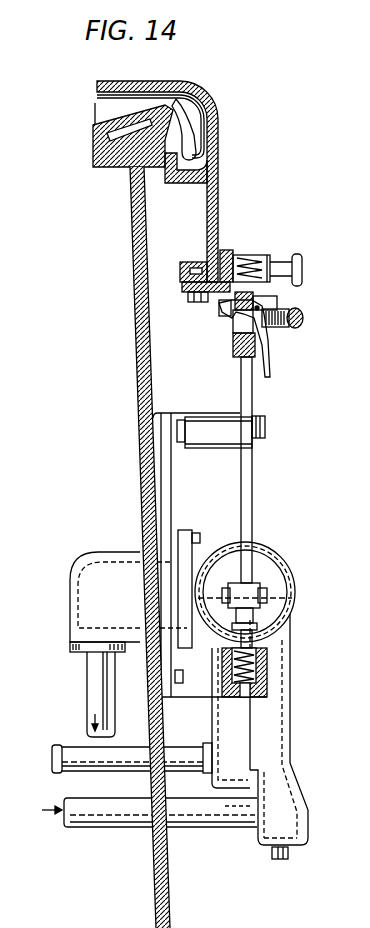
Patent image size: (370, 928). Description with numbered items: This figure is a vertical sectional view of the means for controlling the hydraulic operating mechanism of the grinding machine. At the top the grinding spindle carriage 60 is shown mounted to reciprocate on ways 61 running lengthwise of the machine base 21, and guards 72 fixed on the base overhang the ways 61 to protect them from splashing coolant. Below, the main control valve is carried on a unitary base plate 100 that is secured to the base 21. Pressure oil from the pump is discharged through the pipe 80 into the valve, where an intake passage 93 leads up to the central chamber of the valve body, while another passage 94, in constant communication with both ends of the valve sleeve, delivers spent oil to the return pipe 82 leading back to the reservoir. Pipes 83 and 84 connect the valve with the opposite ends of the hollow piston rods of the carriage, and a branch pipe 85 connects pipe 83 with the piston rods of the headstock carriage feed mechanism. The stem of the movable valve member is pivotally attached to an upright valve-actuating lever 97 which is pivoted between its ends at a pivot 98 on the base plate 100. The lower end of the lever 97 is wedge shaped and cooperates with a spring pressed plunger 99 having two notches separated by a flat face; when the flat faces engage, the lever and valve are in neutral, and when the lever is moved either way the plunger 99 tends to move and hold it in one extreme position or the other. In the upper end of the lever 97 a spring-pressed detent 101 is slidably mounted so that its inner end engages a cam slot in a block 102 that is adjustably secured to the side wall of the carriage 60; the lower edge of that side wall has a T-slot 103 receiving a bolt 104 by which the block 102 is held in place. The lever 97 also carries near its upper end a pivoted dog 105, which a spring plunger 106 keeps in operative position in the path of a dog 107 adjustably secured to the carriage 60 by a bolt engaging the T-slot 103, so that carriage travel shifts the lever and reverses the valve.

The base 21 is at (138, 358).
The grinding spindle carriage 60 is at (219, 174).
The ways 61 is at (123, 170).
The guards 72 is at (186, 140).
The pipe 80 is at (108, 819).
The pipe 82 is at (97, 692).
The pipe 83 is at (55, 762).
The pipe 84 is at (87, 763).
The branch pipe 85 is at (270, 563).
The intake passage 93 is at (287, 703).
The passage 94 is at (118, 566).
The valve-actuating lever 97 is at (253, 488).
The pivot 98 is at (265, 432).
The spring pressed plunger 99 is at (262, 660).
The unitary base plate 100 is at (172, 475).
The spring-pressed detent 101 is at (283, 260).
The block 102 is at (227, 250).
The T-slot 103 is at (197, 262).
The bolt 104 is at (198, 302).
The pivoted dog 105 is at (267, 353).
The spring plunger 106 is at (295, 311).
The dog 107 is at (222, 318).